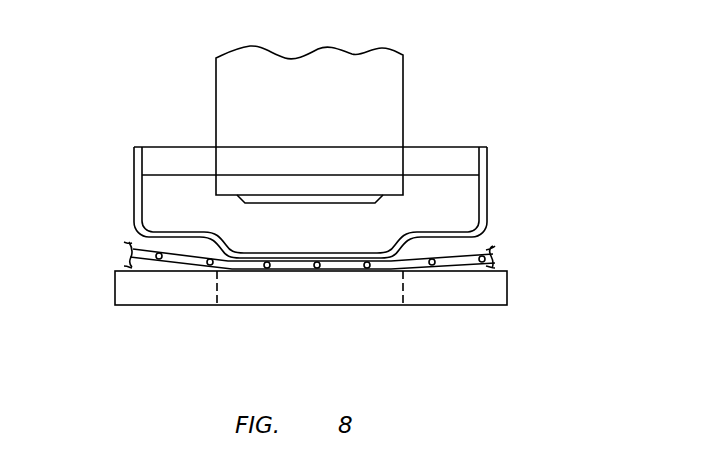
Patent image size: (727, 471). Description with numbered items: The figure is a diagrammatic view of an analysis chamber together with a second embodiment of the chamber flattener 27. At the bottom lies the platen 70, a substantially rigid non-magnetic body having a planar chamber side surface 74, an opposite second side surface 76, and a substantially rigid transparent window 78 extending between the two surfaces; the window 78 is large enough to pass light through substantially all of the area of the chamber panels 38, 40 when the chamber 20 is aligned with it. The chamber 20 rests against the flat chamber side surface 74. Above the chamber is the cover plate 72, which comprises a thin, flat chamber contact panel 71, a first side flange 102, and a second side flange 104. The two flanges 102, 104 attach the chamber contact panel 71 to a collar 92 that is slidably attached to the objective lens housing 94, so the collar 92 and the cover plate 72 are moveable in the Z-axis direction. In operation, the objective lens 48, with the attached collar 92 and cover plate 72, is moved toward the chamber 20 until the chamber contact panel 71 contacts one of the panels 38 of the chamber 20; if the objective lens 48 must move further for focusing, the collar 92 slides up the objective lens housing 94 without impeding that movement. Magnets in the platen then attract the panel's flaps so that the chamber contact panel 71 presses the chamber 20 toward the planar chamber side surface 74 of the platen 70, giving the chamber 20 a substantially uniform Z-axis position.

The chamber flattener 27 is at (297, 214).
The cover plate 72 is at (100, 191).
The collar 92 is at (444, 156).
The objective lens housing 94 is at (380, 77).
The objective lens 48 is at (380, 200).
The second side flange 104 is at (487, 178).
The first side flange 102 is at (133, 211).
The chamber contact panel 71 is at (247, 250).
The chamber panel 38 is at (468, 250).
The chamber 20 is at (304, 249).
The chamber panel 40 is at (473, 271).
The chamber side surface 74 is at (128, 262).
The platen 70 is at (310, 327).
The second side surface 76 is at (143, 306).
The window 78 is at (332, 290).